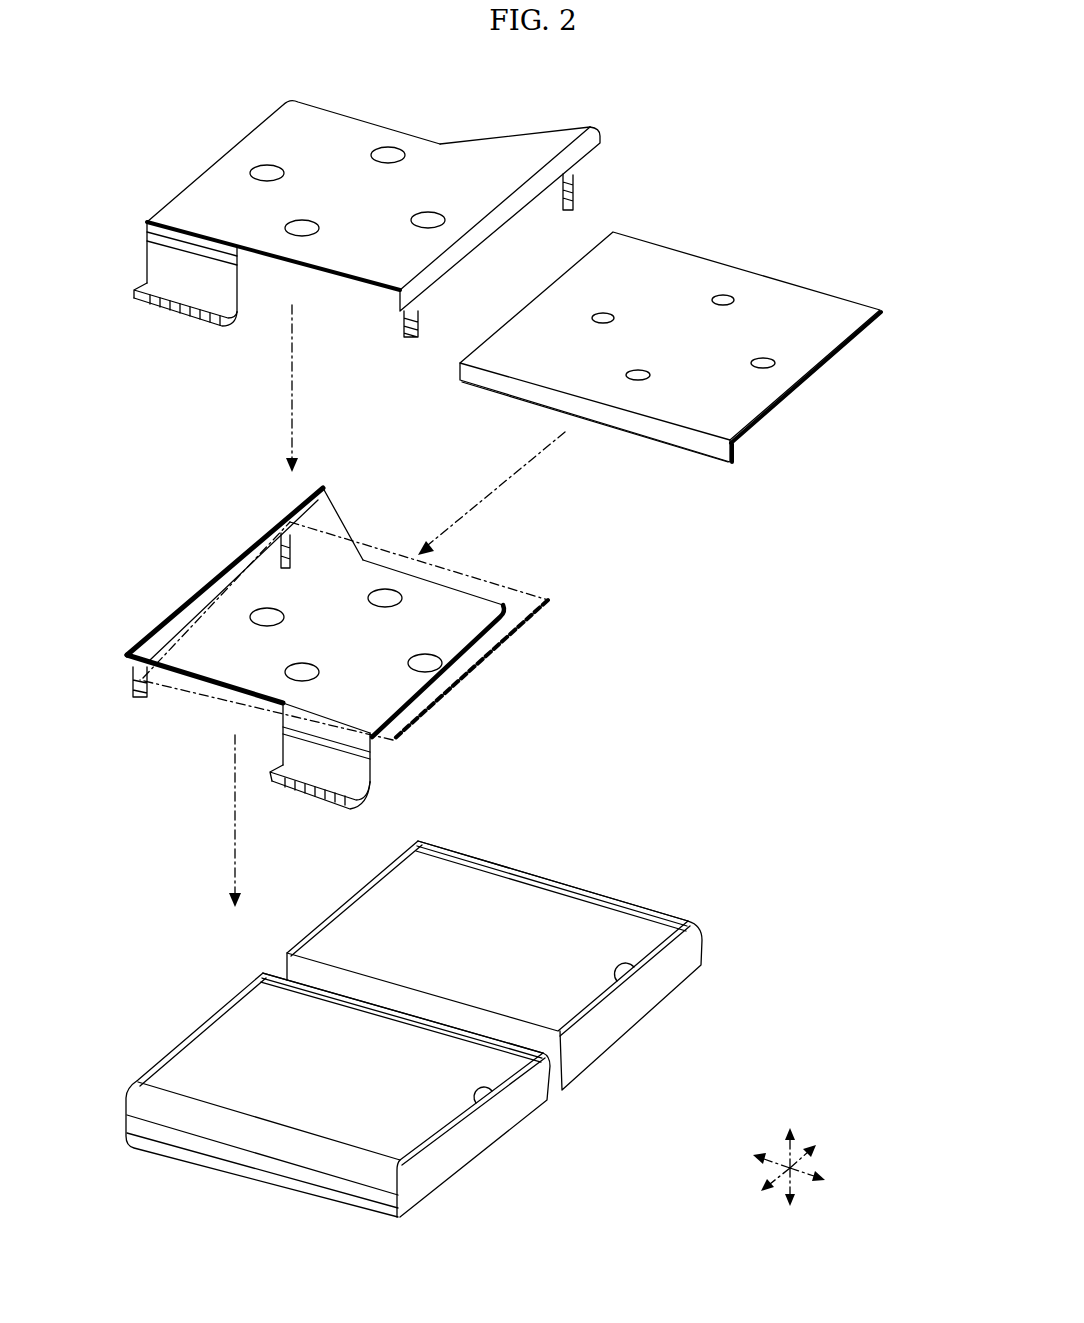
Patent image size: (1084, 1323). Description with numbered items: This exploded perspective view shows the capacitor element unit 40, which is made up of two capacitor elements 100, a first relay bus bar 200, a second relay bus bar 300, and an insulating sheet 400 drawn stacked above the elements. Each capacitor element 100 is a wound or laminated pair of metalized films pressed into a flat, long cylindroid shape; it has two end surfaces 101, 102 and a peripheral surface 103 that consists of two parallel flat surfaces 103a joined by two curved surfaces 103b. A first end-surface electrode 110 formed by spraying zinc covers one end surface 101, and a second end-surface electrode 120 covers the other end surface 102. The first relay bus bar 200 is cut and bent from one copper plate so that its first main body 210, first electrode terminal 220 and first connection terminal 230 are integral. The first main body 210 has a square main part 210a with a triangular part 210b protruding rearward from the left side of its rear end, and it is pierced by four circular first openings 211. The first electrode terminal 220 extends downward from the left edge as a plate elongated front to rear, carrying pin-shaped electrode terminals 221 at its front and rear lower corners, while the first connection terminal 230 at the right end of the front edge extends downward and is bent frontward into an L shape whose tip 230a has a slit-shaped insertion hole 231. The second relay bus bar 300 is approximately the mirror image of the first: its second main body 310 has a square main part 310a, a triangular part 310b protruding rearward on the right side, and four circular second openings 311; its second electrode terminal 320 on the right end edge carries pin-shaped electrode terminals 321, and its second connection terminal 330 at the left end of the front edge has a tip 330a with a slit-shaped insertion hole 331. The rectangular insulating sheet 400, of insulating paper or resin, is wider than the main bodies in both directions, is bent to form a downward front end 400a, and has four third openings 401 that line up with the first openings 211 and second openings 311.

The capacitor element unit 40 is at (778, 688).
The capacitor element 100 is at (666, 903).
The end surface 101 is at (357, 892).
The end surface 102 is at (640, 966).
The peripheral surface 103 is at (470, 878).
The flat surface 103a is at (502, 906).
The curved surface 103b is at (596, 892).
The first end-surface electrode 110 is at (314, 925).
The second end-surface electrode 120 is at (626, 1023).
The first relay bus bar 200 is at (158, 608).
The first main body 210 is at (455, 574).
The main part 210a is at (475, 618).
The part 210b is at (333, 527).
The first opening 211 is at (372, 597).
The first electrode terminal 220 is at (215, 578).
The electrode terminal 221 is at (280, 537).
The first connection terminal 230 is at (345, 753).
The tip 230a is at (367, 801).
The insertion hole 231 is at (310, 790).
The second relay bus bar 300 is at (178, 180).
The second main body 310 is at (215, 160).
The main part 310a is at (275, 132).
The part 310b is at (540, 146).
The second opening 311 is at (280, 163).
The second electrode terminal 320 is at (600, 132).
The electrode terminal 321 is at (575, 185).
The second connection terminal 330 is at (160, 268).
The tip 330a is at (205, 322).
The insertion hole 331 is at (168, 315).
The insulating sheet 400 is at (724, 258).
The front end 400a is at (660, 428).
The third opening 401 is at (638, 368).